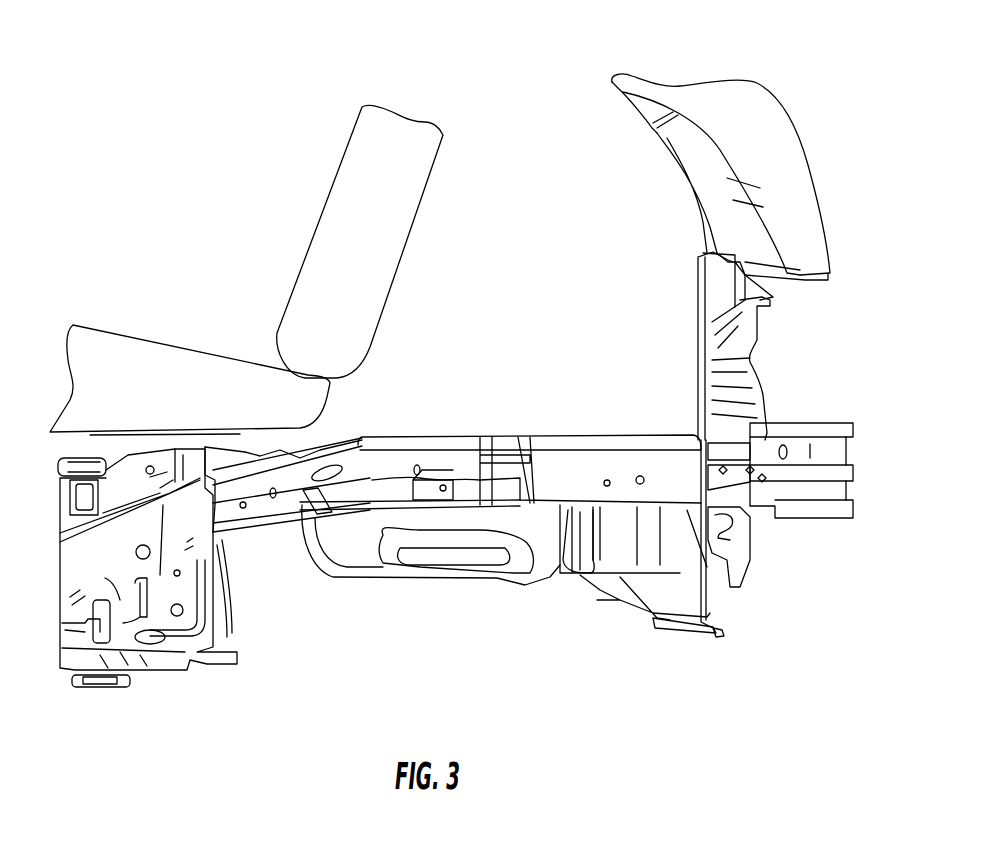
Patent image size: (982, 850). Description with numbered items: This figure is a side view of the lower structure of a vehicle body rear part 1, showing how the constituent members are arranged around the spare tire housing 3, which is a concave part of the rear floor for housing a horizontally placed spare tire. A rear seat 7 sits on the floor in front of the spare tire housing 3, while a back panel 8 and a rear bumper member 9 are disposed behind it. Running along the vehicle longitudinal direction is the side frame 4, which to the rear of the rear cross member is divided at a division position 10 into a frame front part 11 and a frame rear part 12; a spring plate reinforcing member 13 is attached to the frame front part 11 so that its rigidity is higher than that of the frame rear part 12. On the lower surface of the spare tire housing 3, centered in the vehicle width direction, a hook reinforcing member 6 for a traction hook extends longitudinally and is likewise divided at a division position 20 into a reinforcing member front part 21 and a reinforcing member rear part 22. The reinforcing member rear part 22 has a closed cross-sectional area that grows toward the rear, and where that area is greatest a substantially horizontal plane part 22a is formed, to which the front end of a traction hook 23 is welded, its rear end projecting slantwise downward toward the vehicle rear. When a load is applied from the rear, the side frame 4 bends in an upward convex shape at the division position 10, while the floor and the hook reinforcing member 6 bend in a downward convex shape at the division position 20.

The vehicle body rear part 1 is at (776, 76).
The spare tire housing 3 is at (563, 523).
The side frame 4 is at (430, 466).
The hook reinforcing member 6 is at (532, 590).
The rear seat 7 is at (407, 123).
The back panel 8 is at (726, 342).
The rear bumper member 9 is at (808, 430).
The division position 10 is at (533, 467).
The frame front part 11 is at (370, 490).
The frame rear part 12 is at (625, 470).
The spring plate reinforcing member 13 is at (320, 557).
The division position 20 is at (520, 578).
The reinforcing member front part 21 is at (433, 580).
The reinforcing member rear part 22 is at (615, 607).
The substantially horizontal plane part 22a is at (643, 620).
The traction hook 23 is at (718, 631).